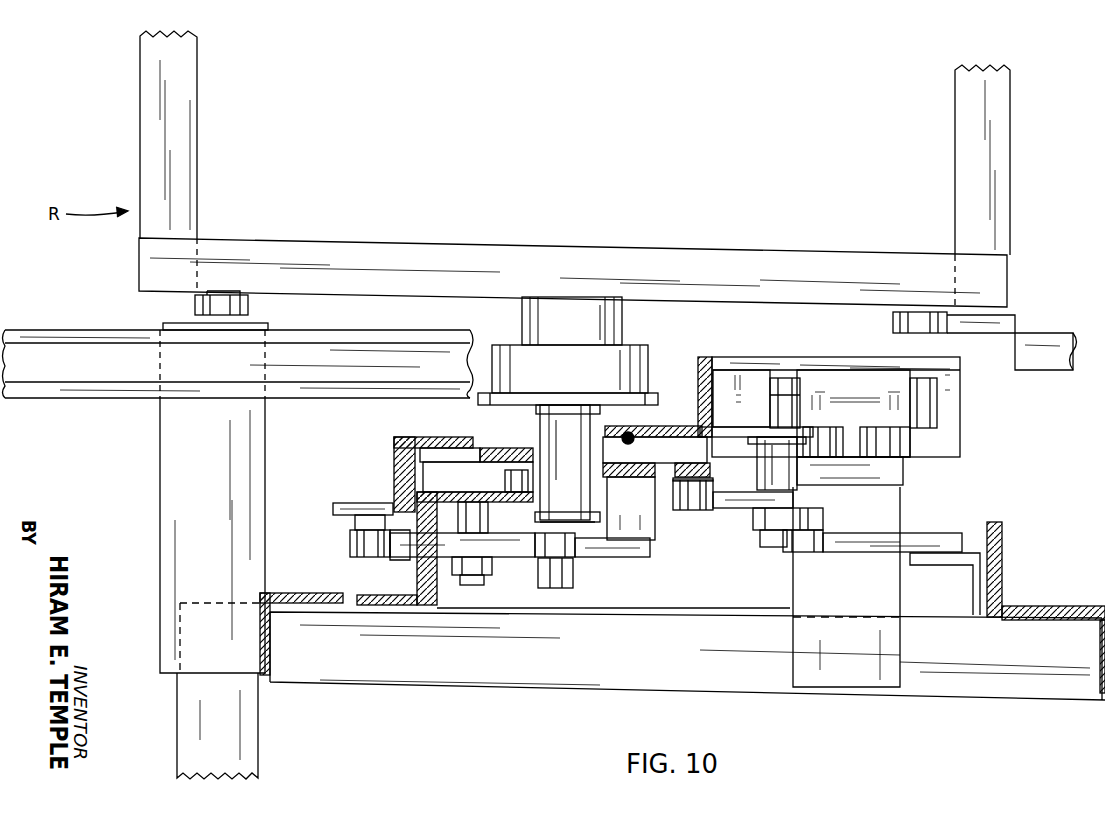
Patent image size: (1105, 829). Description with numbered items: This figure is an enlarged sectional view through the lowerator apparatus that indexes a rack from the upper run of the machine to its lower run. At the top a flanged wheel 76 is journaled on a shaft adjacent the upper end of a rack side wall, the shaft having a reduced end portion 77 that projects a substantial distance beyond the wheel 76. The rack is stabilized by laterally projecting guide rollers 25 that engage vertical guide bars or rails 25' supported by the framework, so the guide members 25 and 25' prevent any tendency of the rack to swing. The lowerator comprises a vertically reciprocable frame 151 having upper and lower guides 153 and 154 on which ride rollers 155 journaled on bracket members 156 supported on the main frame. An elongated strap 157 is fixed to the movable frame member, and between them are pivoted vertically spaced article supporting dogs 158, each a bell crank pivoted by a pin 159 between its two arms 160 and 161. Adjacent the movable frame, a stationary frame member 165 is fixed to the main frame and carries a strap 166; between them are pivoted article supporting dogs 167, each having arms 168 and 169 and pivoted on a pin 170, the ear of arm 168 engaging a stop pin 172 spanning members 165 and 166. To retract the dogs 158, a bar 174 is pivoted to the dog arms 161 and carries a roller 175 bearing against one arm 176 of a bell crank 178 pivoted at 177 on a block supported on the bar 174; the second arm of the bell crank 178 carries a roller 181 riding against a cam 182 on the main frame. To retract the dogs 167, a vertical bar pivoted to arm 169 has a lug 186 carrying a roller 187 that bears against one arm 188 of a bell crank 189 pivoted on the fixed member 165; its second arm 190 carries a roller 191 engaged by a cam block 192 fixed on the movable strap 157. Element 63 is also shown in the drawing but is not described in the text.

The guide roller 25 is at (571, 312).
The guide bar or rail 25' is at (1012, 342).
The flanged wheel 76 is at (645, 372).
The reduced end portion 77 is at (548, 418).
The plate 63 is at (643, 412).
The lower guide 154 is at (712, 357).
The arm 160 is at (552, 434).
The arm 168 is at (575, 516).
The article supporting dog 167 is at (474, 448).
The strap 166 is at (486, 450).
The pin 170 is at (510, 440).
The arm 169 is at (476, 470).
The stop pin 172 is at (500, 503).
The stationary frame member 165 is at (500, 533).
The second arm 190 is at (510, 572).
The bell crank 189 is at (518, 592).
The roller 191 is at (578, 560).
The cam block 192 is at (650, 557).
The strap 157 is at (684, 462).
The pin 159 is at (631, 508).
The arm 161 is at (655, 494).
The bar 174 is at (708, 468).
The roller 175 is at (695, 510).
The arm 176 is at (728, 508).
The pivot 177 is at (768, 550).
The bell crank 178 is at (748, 546).
The roller 181 is at (803, 555).
The cam 182 is at (862, 555).
The vertically reciprocable frame 151 is at (970, 413).
The upper guide 153 is at (962, 445).
The article supporting dog 158 is at (715, 445).
The roller 155 is at (880, 418).
The bracket member 156 is at (845, 472).
The lug 186 is at (365, 503).
The roller 187 is at (348, 545).
The arm 188 is at (390, 550).